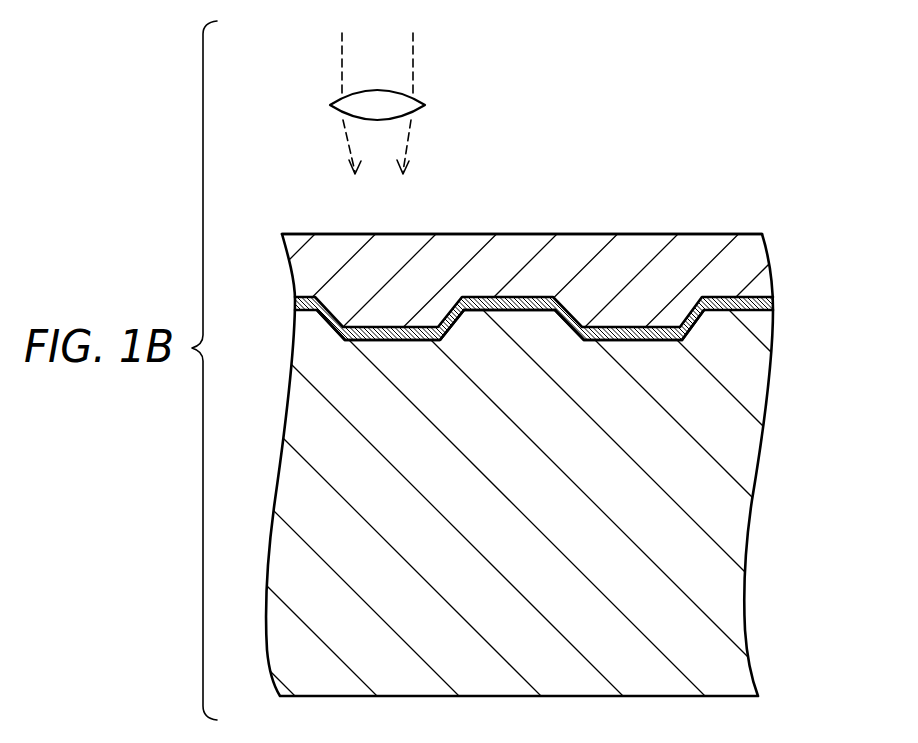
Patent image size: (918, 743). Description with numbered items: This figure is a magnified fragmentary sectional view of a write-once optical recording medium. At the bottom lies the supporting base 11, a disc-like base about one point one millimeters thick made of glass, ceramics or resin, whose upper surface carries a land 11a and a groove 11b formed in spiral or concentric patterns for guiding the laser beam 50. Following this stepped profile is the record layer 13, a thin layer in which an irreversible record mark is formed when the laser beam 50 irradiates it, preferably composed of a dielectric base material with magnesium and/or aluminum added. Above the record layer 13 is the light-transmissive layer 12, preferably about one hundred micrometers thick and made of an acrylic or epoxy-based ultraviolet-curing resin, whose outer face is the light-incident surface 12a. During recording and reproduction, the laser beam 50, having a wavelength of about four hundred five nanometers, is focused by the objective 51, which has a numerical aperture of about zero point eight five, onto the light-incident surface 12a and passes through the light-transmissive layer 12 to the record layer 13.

The supporting base 11 is at (738, 458).
The land 11a is at (388, 340).
The groove 11b is at (510, 312).
The light-transmissive layer 12 is at (750, 253).
The light-incident surface 12a is at (665, 234).
The record layer 13 is at (773, 302).
The laser beam 50 is at (408, 135).
The objective 51 is at (423, 103).